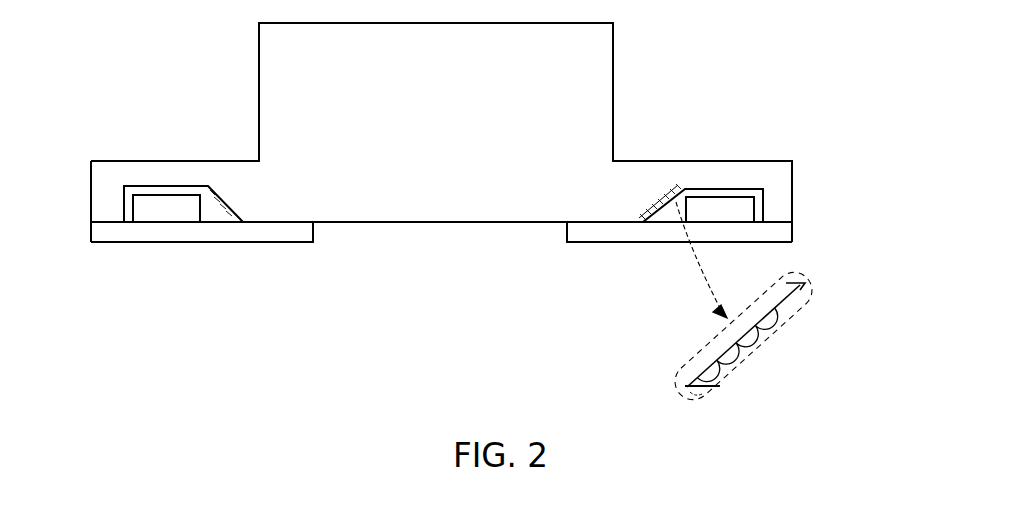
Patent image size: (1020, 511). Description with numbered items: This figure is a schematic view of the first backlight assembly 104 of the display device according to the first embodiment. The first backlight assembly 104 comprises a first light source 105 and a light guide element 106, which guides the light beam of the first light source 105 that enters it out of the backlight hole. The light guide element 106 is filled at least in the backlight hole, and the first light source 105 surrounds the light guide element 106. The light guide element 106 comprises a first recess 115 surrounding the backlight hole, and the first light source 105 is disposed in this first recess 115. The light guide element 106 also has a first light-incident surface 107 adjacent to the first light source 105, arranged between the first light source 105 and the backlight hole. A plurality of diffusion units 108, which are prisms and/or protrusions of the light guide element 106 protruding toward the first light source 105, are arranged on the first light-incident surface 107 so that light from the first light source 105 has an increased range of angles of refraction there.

The first backlight assembly 104 is at (250, 355).
The first light source 105 is at (150, 210).
The light guide element 106 is at (377, 190).
The first light-incident surface 107 is at (718, 352).
The diffusion units 108 is at (770, 328).
The first recess 115 is at (165, 190).